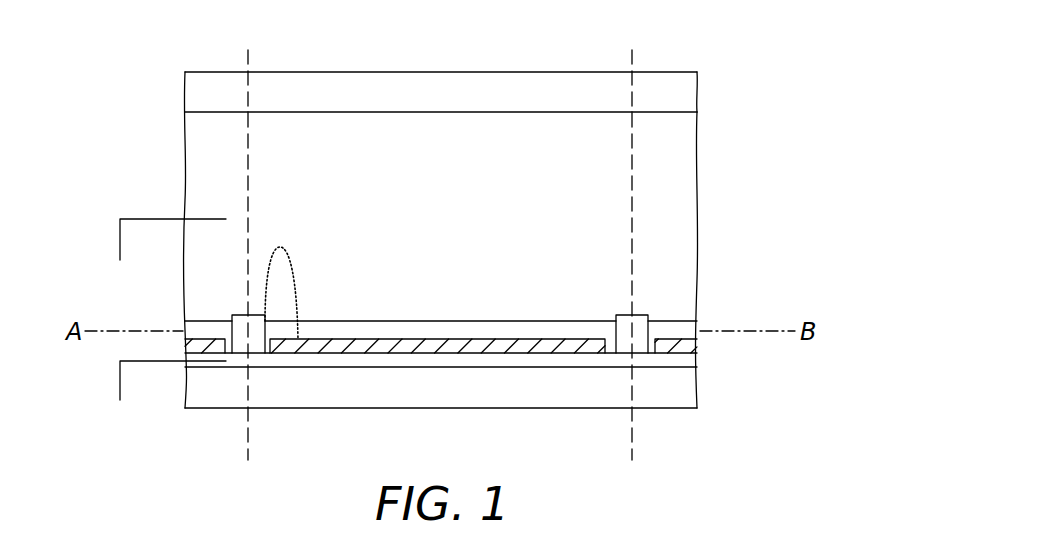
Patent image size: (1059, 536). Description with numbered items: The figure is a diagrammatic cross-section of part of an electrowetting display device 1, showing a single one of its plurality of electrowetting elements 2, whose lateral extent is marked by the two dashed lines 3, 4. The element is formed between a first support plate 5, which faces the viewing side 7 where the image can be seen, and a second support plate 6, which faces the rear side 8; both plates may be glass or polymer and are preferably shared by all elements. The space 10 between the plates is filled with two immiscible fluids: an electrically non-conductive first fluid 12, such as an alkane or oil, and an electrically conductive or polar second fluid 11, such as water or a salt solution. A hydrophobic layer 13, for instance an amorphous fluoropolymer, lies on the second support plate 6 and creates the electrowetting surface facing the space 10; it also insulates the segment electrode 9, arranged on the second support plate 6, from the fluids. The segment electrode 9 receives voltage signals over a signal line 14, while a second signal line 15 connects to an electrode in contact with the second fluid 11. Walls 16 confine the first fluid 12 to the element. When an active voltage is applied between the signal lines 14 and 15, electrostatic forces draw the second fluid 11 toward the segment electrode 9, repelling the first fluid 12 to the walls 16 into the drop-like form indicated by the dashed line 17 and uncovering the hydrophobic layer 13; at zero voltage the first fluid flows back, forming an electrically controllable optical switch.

The electrowetting display device 1 is at (748, 58).
The electrowetting element 2 is at (458, 59).
The dashed line 3 is at (250, 56).
The dashed line 4 is at (635, 57).
The first support plate 5 is at (676, 80).
The second support plate 6 is at (683, 388).
The viewing side 7 is at (305, 73).
The rear side 8 is at (411, 408).
The segment electrode 9 is at (683, 360).
The space 10 is at (510, 128).
The second fluid 11 is at (679, 213).
The first fluid 12 is at (597, 333).
The hydrophobic layer 13 is at (513, 344).
The signal line 14 is at (119, 380).
The second signal line 15 is at (120, 233).
The walls 16 is at (243, 320).
The dashed line 17 is at (276, 260).